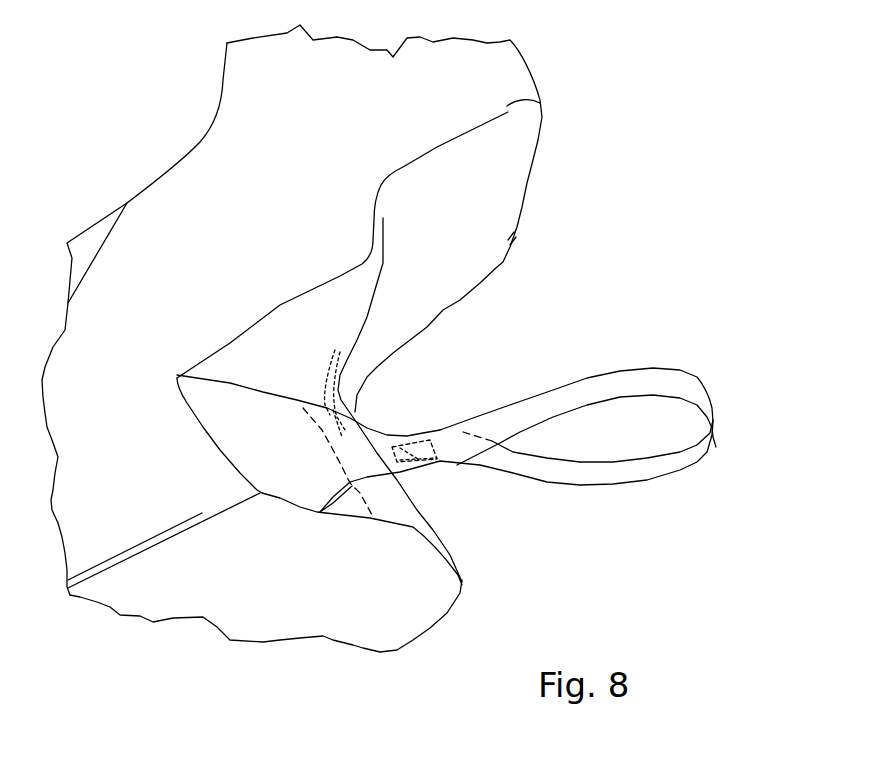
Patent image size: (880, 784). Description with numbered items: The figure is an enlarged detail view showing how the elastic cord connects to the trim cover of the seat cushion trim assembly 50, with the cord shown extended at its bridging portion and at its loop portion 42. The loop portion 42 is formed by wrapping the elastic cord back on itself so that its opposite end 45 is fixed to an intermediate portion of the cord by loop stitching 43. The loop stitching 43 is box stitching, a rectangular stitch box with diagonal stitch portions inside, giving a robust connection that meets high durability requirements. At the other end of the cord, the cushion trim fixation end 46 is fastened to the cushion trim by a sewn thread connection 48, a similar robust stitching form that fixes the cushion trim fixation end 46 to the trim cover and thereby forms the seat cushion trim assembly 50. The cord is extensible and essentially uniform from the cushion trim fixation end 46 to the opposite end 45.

The seat cushion trim assembly 50 is at (560, 200).
The loop portion 42 is at (697, 452).
The loop stitching 43 is at (432, 437).
The opposite end 45 is at (398, 461).
The cushion trim fixation end 46 is at (338, 463).
The sewn thread connection 48 is at (317, 512).